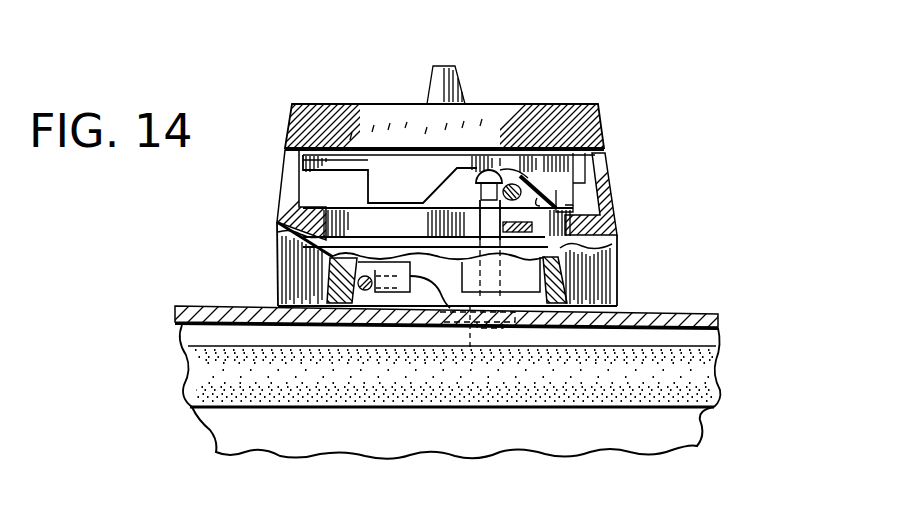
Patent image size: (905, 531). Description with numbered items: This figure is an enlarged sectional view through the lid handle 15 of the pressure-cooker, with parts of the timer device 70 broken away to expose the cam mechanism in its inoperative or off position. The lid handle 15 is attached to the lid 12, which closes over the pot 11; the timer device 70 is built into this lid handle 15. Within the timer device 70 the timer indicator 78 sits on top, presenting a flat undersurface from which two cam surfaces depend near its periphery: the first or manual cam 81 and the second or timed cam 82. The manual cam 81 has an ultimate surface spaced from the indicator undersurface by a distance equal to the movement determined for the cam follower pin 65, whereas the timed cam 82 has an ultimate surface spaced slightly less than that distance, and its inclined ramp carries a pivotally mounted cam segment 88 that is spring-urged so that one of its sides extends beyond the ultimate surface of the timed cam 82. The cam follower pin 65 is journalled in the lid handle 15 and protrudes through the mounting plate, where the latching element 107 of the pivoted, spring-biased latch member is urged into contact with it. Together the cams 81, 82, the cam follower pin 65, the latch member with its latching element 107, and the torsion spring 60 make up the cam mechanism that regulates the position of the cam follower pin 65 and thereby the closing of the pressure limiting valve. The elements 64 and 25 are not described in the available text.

The timer device 70 is at (606, 128).
The timer indicator 78 is at (289, 120).
The first cam surface (manual cam) 81 is at (382, 187).
The cam follower pin 65 is at (492, 166).
The second cam surface (timed cam) 82 is at (533, 170).
The cam segment 88 is at (583, 192).
The latching element 107 is at (533, 227).
The lid handle 15 is at (565, 278).
The torsion spring 60 is at (336, 284).
The conductor 64 is at (470, 352).
The lid 12 is at (197, 306).
The insulation layer 25 is at (697, 378).
The pot 11 is at (223, 433).